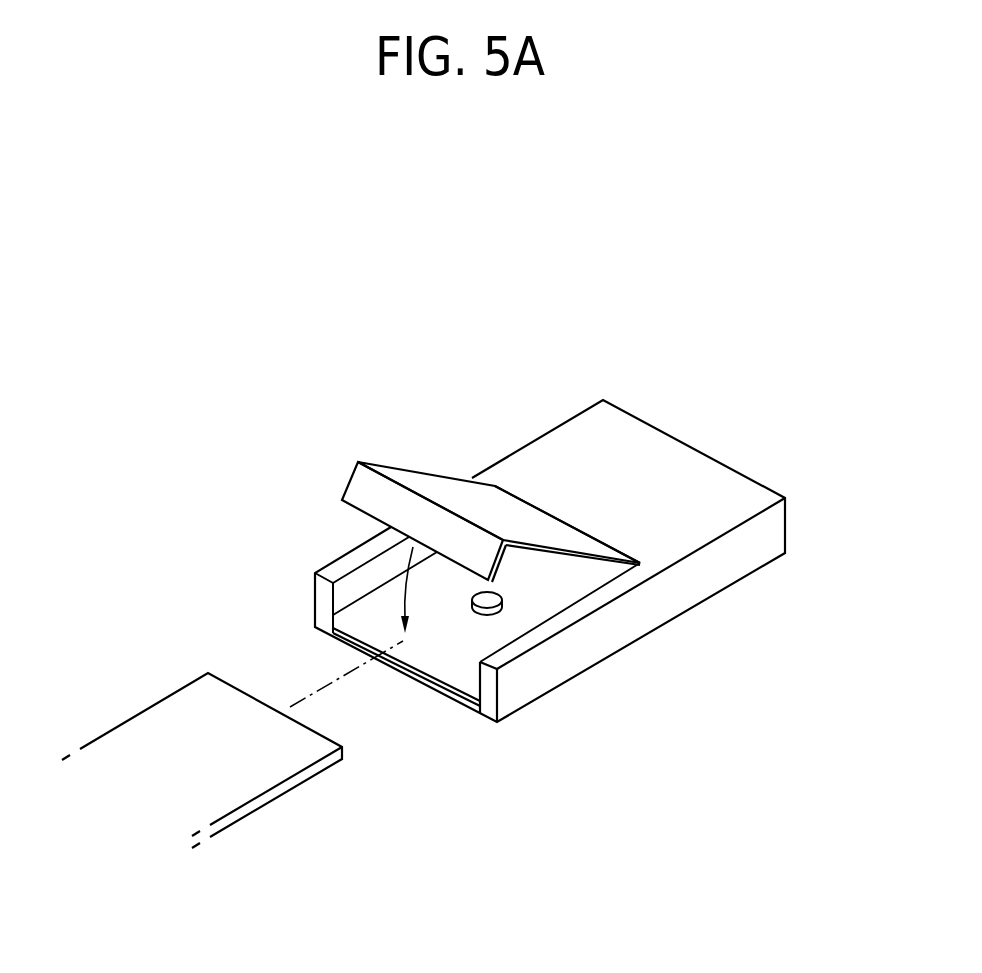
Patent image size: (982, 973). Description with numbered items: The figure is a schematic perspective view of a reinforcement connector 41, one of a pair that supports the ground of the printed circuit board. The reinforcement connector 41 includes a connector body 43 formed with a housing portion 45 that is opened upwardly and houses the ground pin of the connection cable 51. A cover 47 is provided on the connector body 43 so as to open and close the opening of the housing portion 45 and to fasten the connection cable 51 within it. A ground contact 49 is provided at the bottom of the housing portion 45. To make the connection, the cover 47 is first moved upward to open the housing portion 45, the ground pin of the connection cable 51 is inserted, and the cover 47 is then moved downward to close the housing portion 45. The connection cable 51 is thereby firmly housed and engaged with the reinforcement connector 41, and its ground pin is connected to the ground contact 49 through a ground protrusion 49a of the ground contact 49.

The reinforcement connector 41 is at (647, 350).
The connector body 43 is at (755, 572).
The housing portion 45 is at (578, 583).
The cover 47 is at (353, 466).
The ground contact 49 is at (472, 710).
The ground protrusion 49a is at (503, 610).
The connection cable 51 is at (317, 768).